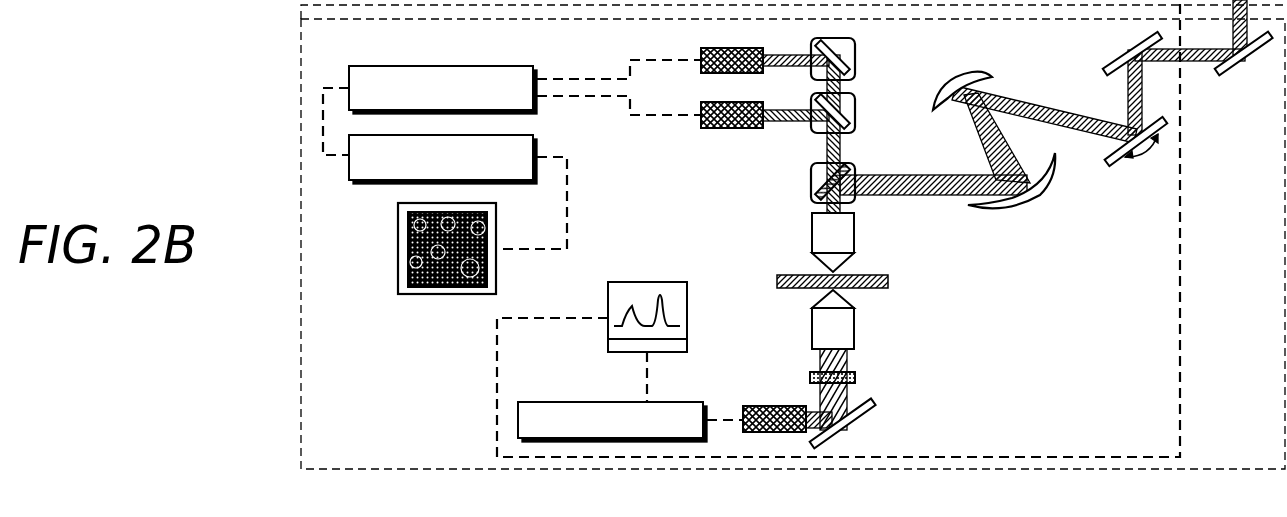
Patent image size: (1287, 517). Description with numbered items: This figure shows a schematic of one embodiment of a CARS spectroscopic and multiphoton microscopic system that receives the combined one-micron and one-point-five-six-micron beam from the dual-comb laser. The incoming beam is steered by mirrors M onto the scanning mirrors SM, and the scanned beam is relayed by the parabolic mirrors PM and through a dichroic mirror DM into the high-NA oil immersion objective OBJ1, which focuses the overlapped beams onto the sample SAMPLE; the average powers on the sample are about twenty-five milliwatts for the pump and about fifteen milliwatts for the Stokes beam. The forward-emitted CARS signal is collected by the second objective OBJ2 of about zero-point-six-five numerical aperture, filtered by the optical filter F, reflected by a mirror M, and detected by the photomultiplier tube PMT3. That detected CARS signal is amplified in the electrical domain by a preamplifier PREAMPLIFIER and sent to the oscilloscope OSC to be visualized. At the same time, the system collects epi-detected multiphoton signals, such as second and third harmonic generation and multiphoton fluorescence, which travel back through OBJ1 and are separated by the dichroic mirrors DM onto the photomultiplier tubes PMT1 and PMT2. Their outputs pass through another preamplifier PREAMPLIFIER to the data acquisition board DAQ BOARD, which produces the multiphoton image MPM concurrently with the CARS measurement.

The preamplifier PREAMPLIFIER is at (528, 254).
The DAQ board DAQ BOARD is at (443, 159).
The multiphoton image MPM is at (447, 265).
The oscilloscope OSC is at (647, 304).
The photomultiplier tube PMT1 is at (765, 48).
The photomultiplier tube PMT2 is at (765, 131).
The photomultiplier tube PMT3 is at (787, 405).
The dichroic mirror DM is at (829, 120).
The microscope objective OBJ1 is at (800, 242).
The microscope objective OBJ2 is at (800, 319).
The sample SAMPLE is at (881, 283).
The filter F is at (844, 382).
The mirror M is at (1041, 241).
The scanning mirrors SM is at (1138, 151).
The parabolic mirror PM is at (994, 139).